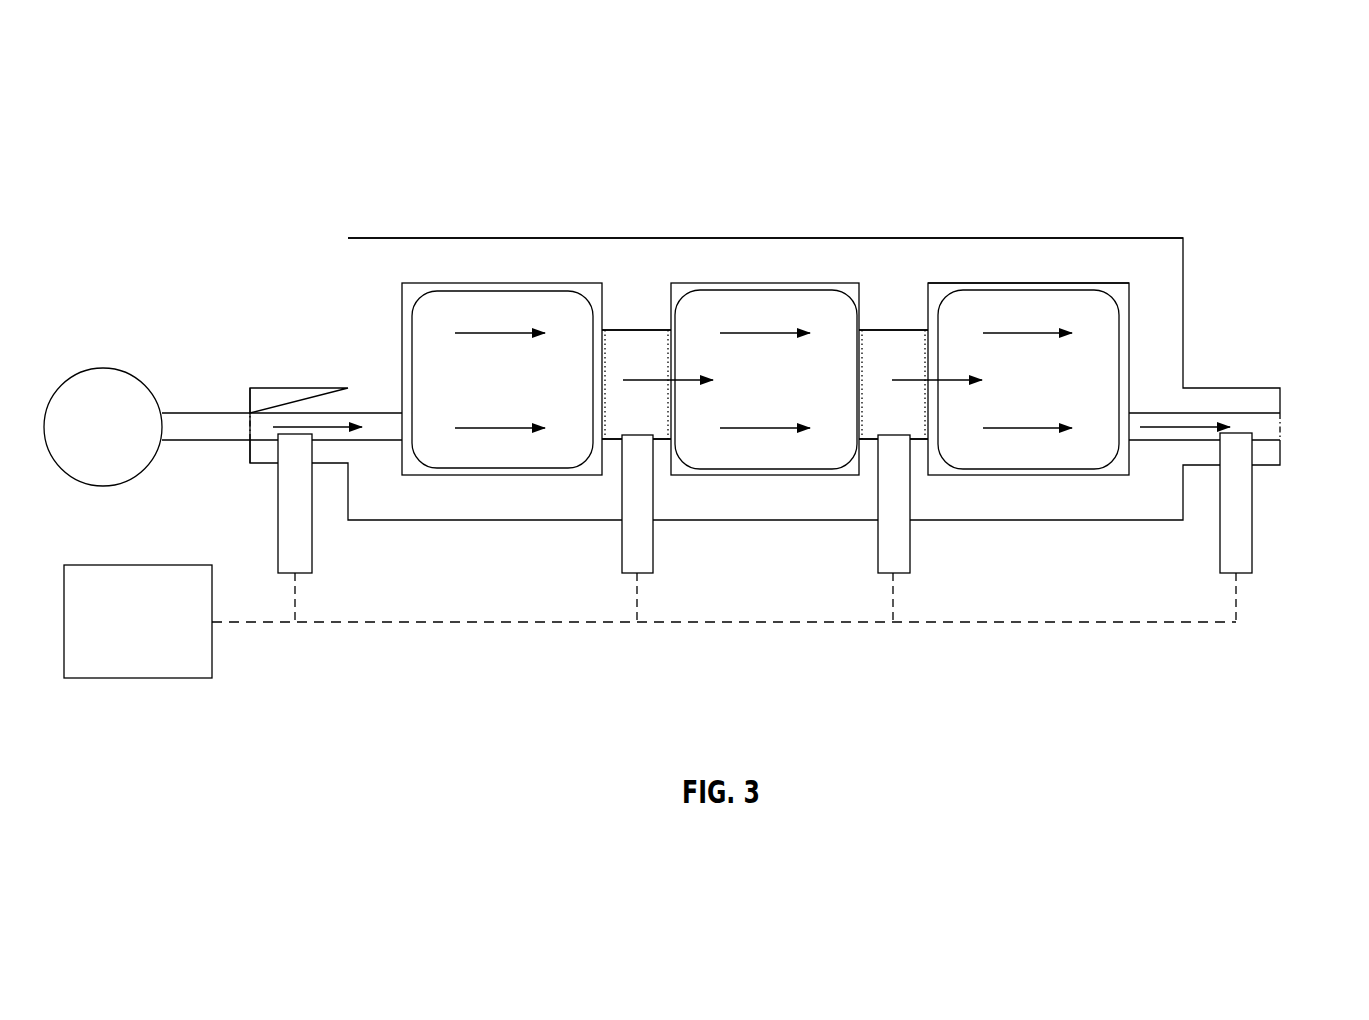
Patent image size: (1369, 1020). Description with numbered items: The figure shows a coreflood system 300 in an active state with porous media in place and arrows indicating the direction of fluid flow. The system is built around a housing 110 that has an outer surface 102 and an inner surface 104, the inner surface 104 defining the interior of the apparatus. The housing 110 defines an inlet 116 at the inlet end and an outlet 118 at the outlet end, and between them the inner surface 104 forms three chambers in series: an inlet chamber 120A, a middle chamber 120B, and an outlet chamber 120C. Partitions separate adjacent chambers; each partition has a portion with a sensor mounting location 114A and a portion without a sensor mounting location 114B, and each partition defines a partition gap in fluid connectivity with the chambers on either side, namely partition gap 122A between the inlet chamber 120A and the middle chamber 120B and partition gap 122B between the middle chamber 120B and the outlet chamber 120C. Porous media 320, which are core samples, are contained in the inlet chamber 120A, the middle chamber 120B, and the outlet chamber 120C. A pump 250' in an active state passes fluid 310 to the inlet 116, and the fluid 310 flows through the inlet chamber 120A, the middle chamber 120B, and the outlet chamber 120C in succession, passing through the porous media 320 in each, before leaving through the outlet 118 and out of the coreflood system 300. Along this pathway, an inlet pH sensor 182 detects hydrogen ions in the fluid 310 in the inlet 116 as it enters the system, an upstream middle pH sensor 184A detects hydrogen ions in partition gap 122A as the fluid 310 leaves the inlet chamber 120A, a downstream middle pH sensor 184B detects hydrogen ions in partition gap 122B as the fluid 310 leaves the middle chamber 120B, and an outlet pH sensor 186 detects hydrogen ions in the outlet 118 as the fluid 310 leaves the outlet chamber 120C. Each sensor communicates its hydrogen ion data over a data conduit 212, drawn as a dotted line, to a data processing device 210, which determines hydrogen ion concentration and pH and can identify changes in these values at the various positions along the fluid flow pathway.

The coreflood system 300 is at (262, 100).
The pump 250' is at (103, 427).
The fluid 310 is at (313, 425).
The inlet 116 is at (252, 430).
The outlet 118 is at (1280, 433).
The housing 110 is at (473, 252).
The inner surface 104 is at (1137, 237).
The outer surface 102 is at (955, 287).
The inlet chamber 120A is at (593, 292).
The middle chamber 120B is at (852, 287).
The outlet chamber 120C is at (1123, 287).
The portion of the partition with a sensor mounting location 114A is at (612, 457).
The portion of the partition without sensor mounting location 114B is at (642, 310).
The partition gap 122A is at (657, 384).
The partition gap 122B is at (920, 384).
The porous media 320 is at (763, 380).
The inlet pH sensor 182 is at (300, 562).
The upstream middle pH sensor 184A is at (630, 563).
The downstream middle pH sensor 184B is at (887, 563).
The outlet pH sensor 186 is at (1245, 567).
The data processing device 210 is at (138, 621).
The data conduit 212 is at (505, 623).